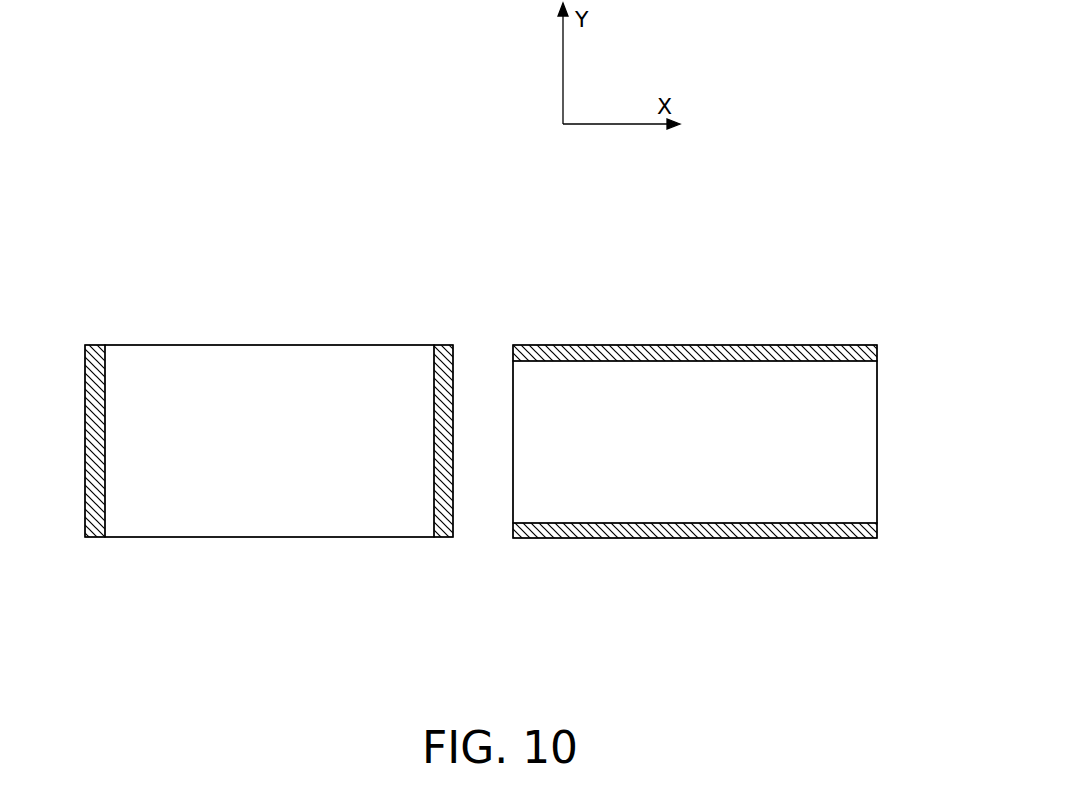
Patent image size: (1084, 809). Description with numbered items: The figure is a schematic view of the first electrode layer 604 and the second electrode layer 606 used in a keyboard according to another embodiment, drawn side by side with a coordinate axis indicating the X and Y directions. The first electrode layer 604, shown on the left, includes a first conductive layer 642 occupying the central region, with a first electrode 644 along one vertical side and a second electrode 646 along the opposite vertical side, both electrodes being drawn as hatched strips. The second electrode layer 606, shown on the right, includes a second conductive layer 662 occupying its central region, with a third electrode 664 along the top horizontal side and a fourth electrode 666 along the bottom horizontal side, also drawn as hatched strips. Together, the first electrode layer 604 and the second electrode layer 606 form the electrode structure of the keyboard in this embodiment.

The first electrode layer 604 is at (291, 385).
The first conductive layer 642 is at (310, 345).
The first electrode 644 is at (94, 347).
The second electrode 646 is at (440, 346).
The second electrode layer 606 is at (712, 457).
The second conductive layer 662 is at (877, 480).
The third electrode 664 is at (825, 352).
The fourth electrode 666 is at (656, 532).